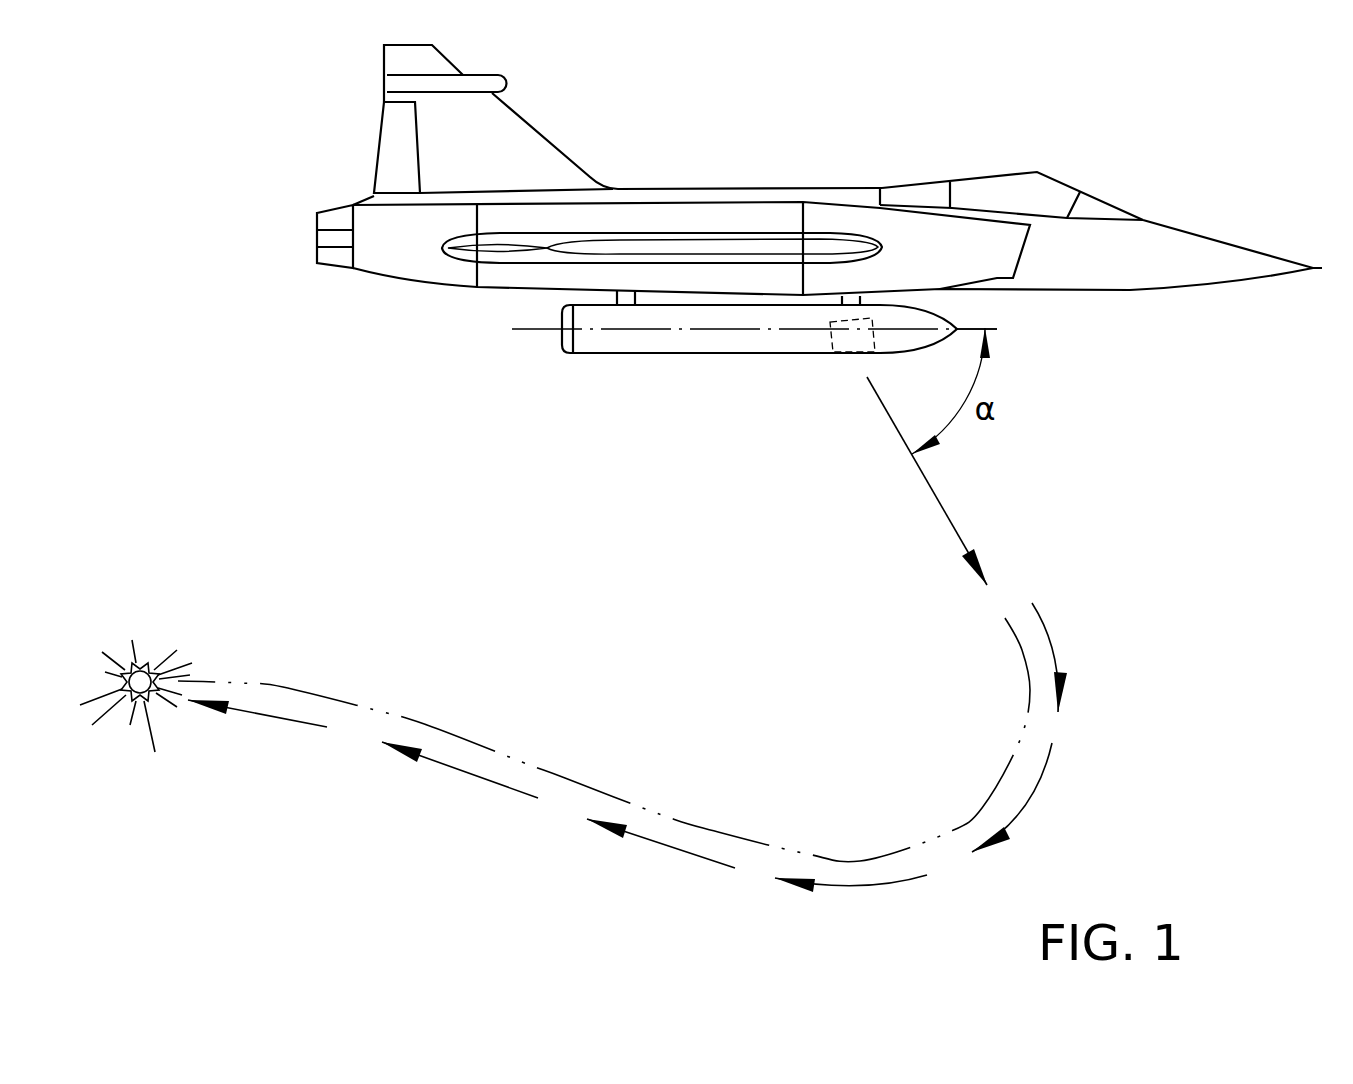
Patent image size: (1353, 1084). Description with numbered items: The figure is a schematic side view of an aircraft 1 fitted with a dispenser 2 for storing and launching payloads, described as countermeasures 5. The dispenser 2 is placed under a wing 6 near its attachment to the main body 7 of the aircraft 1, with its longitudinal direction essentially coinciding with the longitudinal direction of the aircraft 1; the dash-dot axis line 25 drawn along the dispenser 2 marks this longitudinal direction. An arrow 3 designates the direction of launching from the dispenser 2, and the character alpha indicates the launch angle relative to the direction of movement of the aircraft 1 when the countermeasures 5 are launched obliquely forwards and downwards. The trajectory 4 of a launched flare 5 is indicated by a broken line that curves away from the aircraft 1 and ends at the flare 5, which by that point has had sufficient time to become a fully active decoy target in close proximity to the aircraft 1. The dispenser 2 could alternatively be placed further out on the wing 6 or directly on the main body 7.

The aircraft 1 is at (819, 175).
The dispenser 2 is at (727, 355).
The arrow 3 is at (950, 518).
The trajectory 4 is at (477, 744).
The countermeasures 5 is at (153, 662).
The wing 6 is at (677, 240).
The main body 7 is at (1187, 257).
The longitudinal axis of pod 25 is at (993, 325).